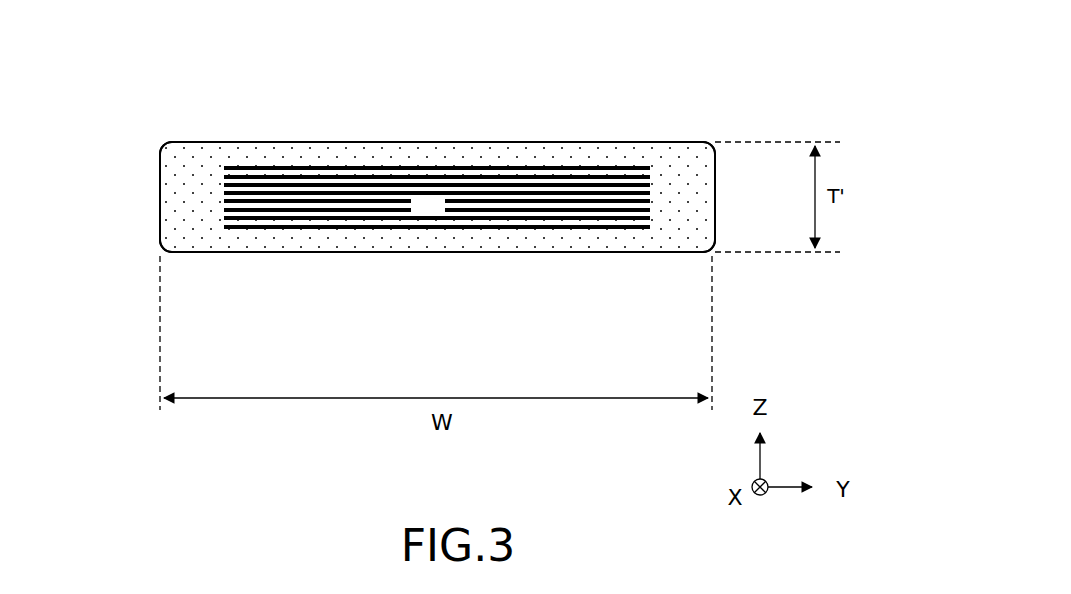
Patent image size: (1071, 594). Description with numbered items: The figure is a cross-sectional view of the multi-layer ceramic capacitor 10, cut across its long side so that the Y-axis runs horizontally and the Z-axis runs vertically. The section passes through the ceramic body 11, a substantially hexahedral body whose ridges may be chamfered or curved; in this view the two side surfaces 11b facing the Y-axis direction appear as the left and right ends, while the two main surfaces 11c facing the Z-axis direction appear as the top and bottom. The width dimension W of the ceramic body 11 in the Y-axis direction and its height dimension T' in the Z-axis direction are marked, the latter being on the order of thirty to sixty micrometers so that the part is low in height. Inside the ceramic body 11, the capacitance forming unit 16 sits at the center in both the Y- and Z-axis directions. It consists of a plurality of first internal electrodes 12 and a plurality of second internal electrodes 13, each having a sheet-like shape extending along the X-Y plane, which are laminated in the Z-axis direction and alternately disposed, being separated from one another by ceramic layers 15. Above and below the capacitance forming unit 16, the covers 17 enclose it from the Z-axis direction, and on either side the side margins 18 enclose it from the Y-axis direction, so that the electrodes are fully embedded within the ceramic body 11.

The multi-layer ceramic capacitor 10 is at (703, 95).
The ceramic body 11 is at (377, 265).
The side surfaces 11b is at (160, 198).
The main surfaces 11c is at (628, 142).
The first internal electrodes 12 is at (368, 227).
The second internal electrodes 13 is at (453, 222).
The ceramic layers 15 is at (589, 280).
The capacitance forming unit 16 is at (444, 216).
The covers 17 is at (288, 155).
The side margins 18 is at (175, 207).